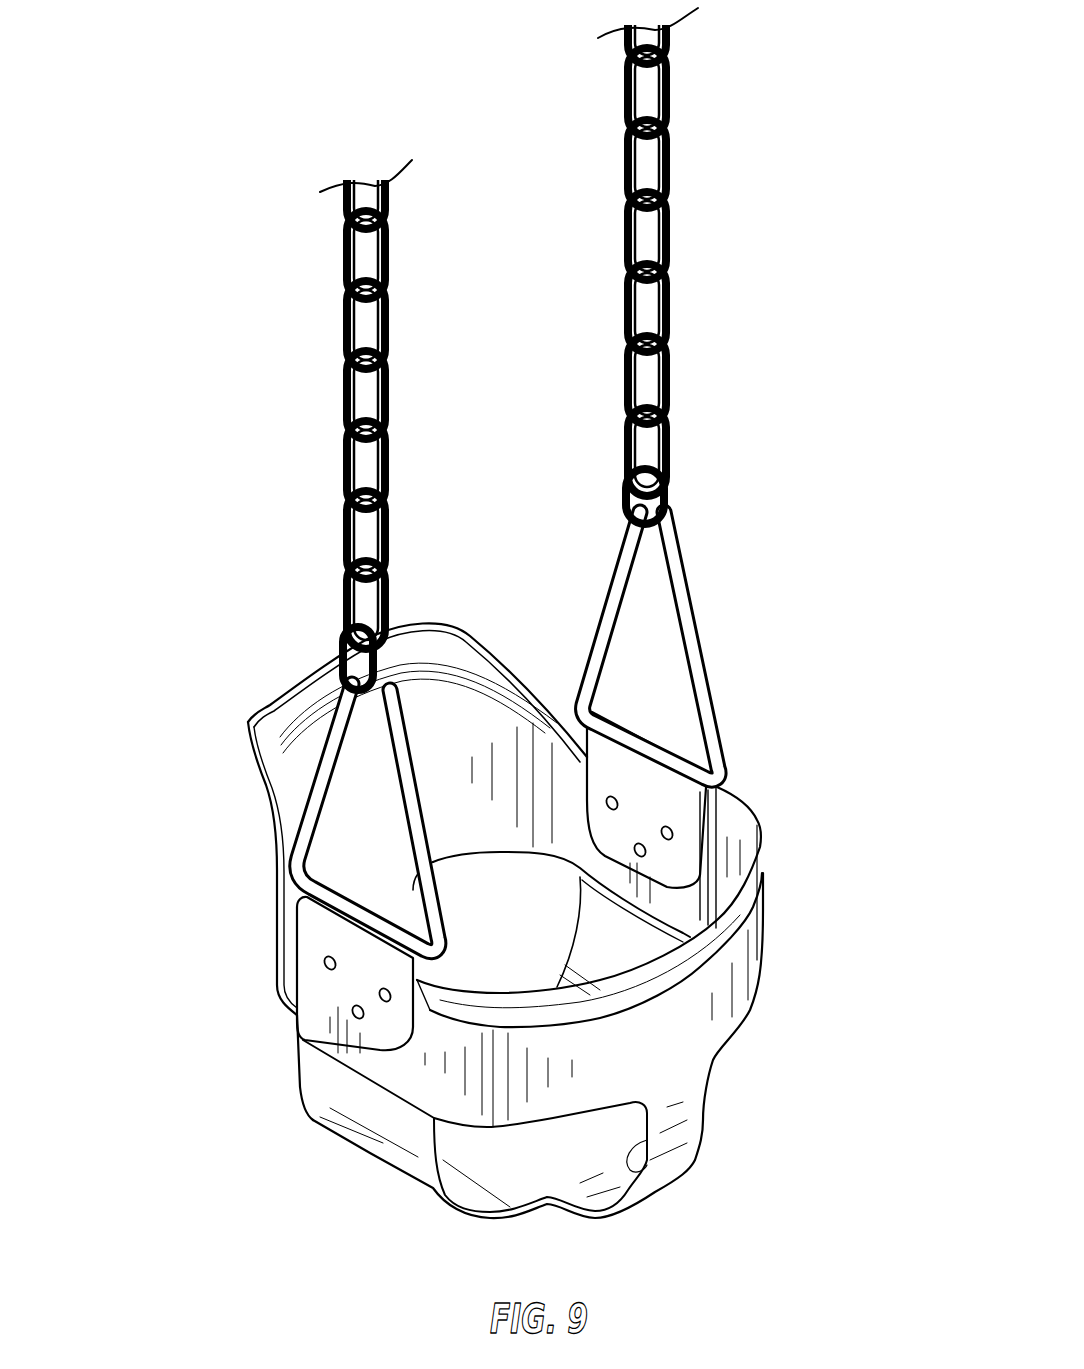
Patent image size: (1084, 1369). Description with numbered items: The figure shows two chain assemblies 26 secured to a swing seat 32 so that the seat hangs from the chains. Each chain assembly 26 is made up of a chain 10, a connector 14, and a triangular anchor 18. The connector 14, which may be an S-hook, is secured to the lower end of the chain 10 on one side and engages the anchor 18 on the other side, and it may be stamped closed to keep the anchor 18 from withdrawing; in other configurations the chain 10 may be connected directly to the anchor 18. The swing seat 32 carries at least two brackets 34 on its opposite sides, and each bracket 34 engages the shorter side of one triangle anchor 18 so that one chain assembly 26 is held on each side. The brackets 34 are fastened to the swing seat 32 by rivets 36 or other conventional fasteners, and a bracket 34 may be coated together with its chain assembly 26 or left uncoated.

The chain 10 is at (332, 369).
The connector 14 is at (342, 602).
The anchor 18 is at (308, 831).
The chain assembly 26 is at (500, 920).
The swing seat 32 is at (302, 800).
The bracket 34 is at (504, 881).
The rivets 36 is at (380, 994).